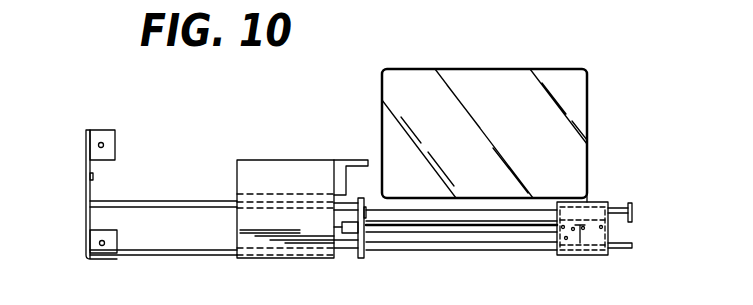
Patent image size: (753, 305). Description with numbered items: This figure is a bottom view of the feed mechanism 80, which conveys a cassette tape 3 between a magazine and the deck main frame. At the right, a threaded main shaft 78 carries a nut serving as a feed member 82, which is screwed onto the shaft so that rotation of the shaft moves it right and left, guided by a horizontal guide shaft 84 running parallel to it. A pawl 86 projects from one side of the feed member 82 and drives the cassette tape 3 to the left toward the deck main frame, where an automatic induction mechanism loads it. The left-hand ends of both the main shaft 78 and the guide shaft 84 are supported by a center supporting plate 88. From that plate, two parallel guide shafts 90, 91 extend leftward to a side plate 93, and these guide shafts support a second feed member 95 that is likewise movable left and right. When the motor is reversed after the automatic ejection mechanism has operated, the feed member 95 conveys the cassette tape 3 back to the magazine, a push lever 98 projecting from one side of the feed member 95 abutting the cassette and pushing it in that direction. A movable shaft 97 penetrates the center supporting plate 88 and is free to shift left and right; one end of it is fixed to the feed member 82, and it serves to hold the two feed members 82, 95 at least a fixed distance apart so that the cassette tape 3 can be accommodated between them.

The cassette tape 3 is at (588, 78).
The main shaft 78 is at (619, 210).
The feed mechanism 80 is at (215, 156).
The feed member 82 is at (592, 256).
The horizontal guide shaft 84 is at (505, 249).
The pawl 86 is at (593, 198).
The center supporting plate 88 is at (363, 255).
The guide shaft 90 is at (161, 201).
The guide shaft 91 is at (160, 257).
The side plate 93 is at (87, 219).
The feed member 95 is at (262, 170).
The movable shaft 97 is at (440, 241).
The push lever 98 is at (342, 160).